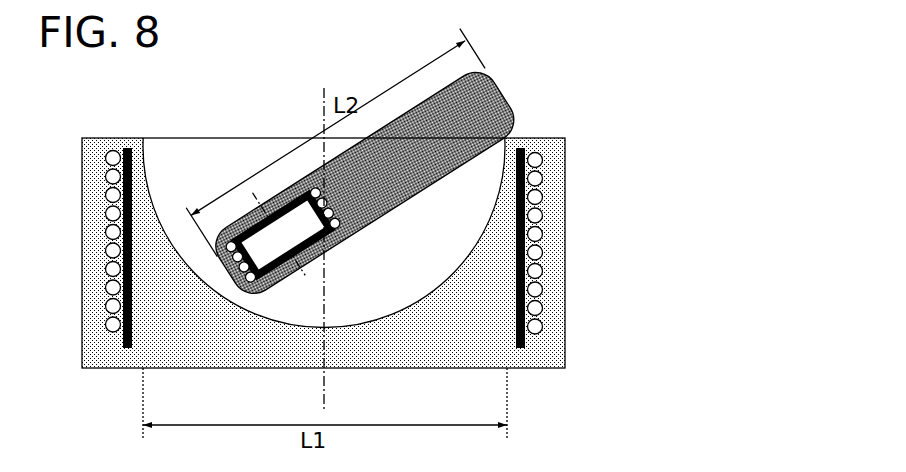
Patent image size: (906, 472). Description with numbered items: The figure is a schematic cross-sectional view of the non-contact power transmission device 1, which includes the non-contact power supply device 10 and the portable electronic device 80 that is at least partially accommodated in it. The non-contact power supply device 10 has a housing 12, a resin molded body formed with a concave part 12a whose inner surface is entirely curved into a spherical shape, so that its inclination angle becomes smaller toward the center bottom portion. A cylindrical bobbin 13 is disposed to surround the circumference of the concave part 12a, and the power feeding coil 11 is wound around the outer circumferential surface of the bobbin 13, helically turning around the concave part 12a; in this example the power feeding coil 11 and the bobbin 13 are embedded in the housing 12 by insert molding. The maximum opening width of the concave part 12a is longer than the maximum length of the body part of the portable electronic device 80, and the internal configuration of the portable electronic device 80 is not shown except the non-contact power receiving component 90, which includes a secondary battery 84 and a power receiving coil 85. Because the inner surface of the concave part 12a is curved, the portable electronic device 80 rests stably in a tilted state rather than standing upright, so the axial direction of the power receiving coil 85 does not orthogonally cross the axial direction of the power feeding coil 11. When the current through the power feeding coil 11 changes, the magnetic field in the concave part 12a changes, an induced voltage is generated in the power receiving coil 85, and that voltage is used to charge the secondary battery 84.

The non-contact power transmission device 1 is at (427, 236).
The non-contact power supply device 10 is at (390, 226).
The power feeding coil 11 is at (536, 310).
The housing 12 is at (558, 168).
The concave part 12a is at (152, 188).
The bobbin 13 is at (522, 347).
The portable electronic device 80 is at (413, 220).
The secondary battery 84 is at (283, 235).
The power receiving coil 85 is at (282, 235).
The non-contact power receiving component 90 is at (281, 233).